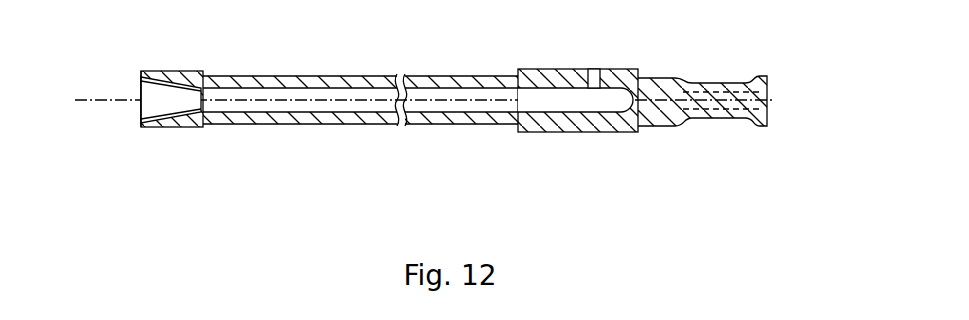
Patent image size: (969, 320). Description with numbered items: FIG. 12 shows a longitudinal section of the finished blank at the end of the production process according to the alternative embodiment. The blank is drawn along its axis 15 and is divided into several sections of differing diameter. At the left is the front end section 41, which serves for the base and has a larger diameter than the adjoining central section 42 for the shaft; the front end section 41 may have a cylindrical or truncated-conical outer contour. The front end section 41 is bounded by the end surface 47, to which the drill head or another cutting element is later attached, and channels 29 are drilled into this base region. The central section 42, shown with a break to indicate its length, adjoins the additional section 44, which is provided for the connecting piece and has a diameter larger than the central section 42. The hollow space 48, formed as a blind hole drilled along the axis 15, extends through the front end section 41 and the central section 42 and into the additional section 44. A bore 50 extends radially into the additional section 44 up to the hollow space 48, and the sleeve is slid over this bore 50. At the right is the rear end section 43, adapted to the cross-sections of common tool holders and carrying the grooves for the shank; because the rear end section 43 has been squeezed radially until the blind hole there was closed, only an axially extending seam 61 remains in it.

The axis 15 is at (123, 98).
The channels 29 is at (170, 73).
The front end section 41 is at (122, 118).
The central section 42 is at (363, 122).
The rear end section 43 is at (632, 174).
The additional section 44 is at (578, 116).
The end surface 47 is at (136, 80).
The hollow space 48 is at (333, 84).
The bore 50 is at (597, 76).
The seam 61 is at (664, 80).